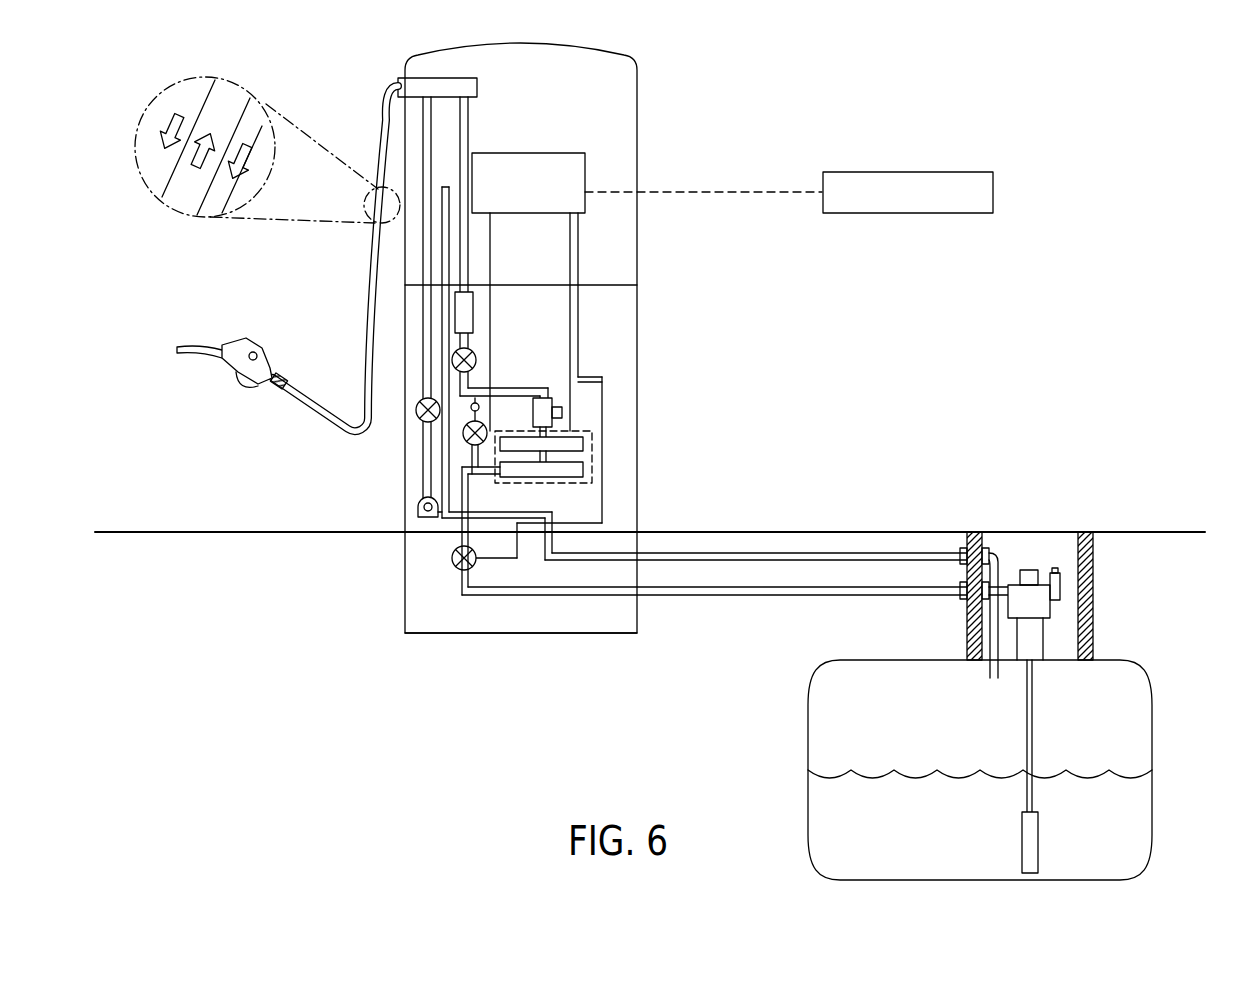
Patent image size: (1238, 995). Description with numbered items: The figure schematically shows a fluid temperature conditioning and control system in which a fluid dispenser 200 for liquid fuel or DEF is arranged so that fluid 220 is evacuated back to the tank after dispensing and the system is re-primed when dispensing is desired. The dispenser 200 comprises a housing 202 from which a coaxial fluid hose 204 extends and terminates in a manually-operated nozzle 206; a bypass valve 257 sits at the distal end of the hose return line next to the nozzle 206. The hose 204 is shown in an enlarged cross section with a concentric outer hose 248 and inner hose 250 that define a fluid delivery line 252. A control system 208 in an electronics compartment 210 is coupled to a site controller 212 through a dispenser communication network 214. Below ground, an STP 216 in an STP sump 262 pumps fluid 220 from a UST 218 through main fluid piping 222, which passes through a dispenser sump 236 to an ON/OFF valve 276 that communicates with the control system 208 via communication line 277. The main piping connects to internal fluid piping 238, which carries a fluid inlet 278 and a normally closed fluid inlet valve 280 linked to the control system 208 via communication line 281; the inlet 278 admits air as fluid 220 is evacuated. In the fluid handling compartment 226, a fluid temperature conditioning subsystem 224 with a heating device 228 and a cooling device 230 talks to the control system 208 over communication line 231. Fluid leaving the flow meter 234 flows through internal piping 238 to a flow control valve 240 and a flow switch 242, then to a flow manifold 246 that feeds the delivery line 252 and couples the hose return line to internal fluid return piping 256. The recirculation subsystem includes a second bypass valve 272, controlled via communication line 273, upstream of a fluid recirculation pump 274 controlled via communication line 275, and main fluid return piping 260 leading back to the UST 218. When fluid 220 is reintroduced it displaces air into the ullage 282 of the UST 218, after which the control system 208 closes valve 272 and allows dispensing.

The fluid dispenser 200 is at (659, 67).
The housing 202 is at (640, 122).
The coaxial fluid hose 204 is at (297, 402).
The nozzle 206 is at (230, 370).
The control system 208 is at (516, 152).
The electronics compartment 210 is at (616, 263).
The site controller 212 is at (948, 171).
The dispenser communication network 214 is at (750, 188).
The STP 216 is at (1048, 546).
The UST 218 is at (1122, 660).
The fluid 220 is at (1140, 808).
The main fluid piping 222 is at (758, 596).
The fluid temperature conditioning subsystem 224 is at (593, 481).
The fluid handling compartment 226 is at (616, 322).
The heating device 228 is at (585, 445).
The cooling device 230 is at (585, 468).
The communication line 231 is at (572, 315).
The flow meter 234 is at (520, 412).
The dispenser sump 236 is at (405, 626).
The internal fluid piping 238 is at (518, 393).
The flow control valve 240 is at (477, 357).
The flow switch 242 is at (473, 304).
The flow manifold 246 is at (437, 83).
The outer hose 248 is at (158, 112).
The inner hose 250 is at (225, 92).
The fluid delivery line 252 is at (187, 92).
The internal fluid return piping 256 is at (430, 266).
The bypass valve 257 is at (279, 376).
The main fluid return piping 260 is at (847, 561).
The STP sump 262 is at (1091, 566).
The second bypass valve 272 is at (416, 410).
The communication line 273 is at (441, 343).
The fluid recirculation pump 274 is at (418, 504).
The communication line 275 is at (443, 309).
The ON/OFF valve 276 is at (456, 566).
The communication line 277 is at (580, 340).
The fluid inlet 278 is at (470, 405).
The fluid inlet valve 280 is at (465, 427).
The communication line 281 is at (491, 254).
The ullage 282 is at (1140, 740).